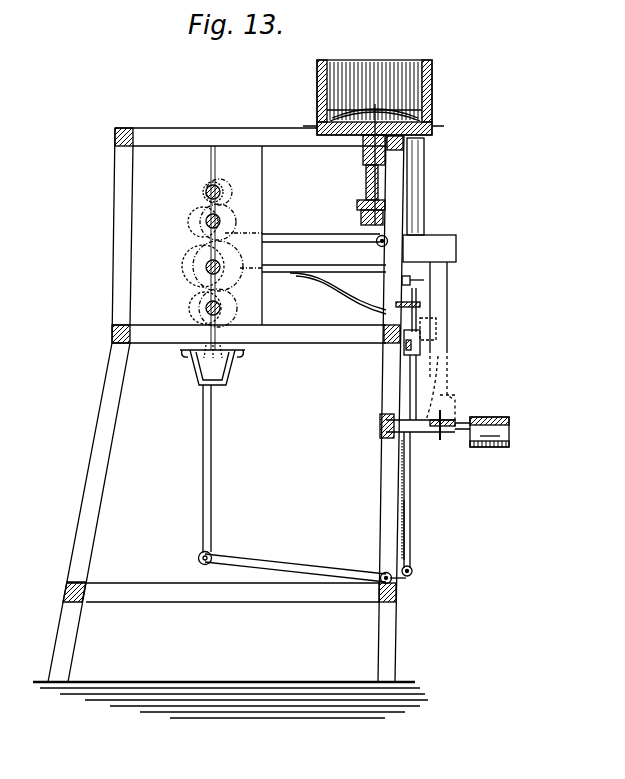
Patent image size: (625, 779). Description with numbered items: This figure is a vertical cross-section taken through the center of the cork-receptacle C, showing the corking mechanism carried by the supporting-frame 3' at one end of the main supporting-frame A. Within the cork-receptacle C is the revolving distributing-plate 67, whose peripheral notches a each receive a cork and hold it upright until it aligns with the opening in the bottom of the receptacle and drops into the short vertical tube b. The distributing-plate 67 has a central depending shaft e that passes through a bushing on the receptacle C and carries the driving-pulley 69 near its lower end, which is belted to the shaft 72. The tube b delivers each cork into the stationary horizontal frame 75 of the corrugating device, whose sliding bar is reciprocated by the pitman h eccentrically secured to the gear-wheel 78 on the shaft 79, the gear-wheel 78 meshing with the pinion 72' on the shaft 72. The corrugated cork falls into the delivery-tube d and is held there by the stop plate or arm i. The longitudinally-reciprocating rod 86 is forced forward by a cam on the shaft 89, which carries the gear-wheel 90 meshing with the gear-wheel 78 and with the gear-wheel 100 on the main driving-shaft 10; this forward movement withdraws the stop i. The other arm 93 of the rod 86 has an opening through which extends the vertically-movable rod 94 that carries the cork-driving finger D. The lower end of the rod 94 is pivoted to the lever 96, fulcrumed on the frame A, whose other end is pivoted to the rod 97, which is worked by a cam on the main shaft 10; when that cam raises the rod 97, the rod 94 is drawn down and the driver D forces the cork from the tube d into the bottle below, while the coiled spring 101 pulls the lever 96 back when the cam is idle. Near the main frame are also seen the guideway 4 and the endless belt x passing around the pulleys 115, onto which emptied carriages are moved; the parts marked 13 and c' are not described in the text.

The supporting-frame of the corking mechanism 3' is at (230, 415).
The supporting-frame A is at (208, 512).
The cork-supply receptacle C is at (374, 97).
The distributing-plate 67 is at (398, 120).
The peripheral notches a is at (373, 121).
The central depending shaft e is at (366, 178).
The driving-pulley 69 is at (361, 212).
The vertical tube b is at (422, 186).
The stationary horizontal frame 75 is at (429, 248).
The delivery-tube d is at (446, 346).
The pitman h is at (325, 232).
The longitudinally-reciprocating rod 86 is at (324, 261).
The arm of the rod 86 93 is at (338, 296).
The pinion 72' is at (203, 248).
The shaft 72 is at (205, 192).
The gear-wheel 78 is at (197, 222).
The shaft 79 is at (218, 224).
The shaft 89 is at (208, 266).
The gear-wheel 90 is at (216, 266).
The gear-wheel 100 is at (198, 308).
The main driving-shaft 10 is at (222, 310).
The rod 97 is at (212, 451).
The lever 96 is at (303, 568).
The lug 13 is at (399, 281).
The stop plate or arm i is at (417, 280).
The cork-driving finger D is at (404, 345).
The rod c' is at (416, 387).
The guideway 4 is at (436, 432).
The endless belt x is at (473, 447).
The pulleys 115 is at (509, 437).
The vertically-movable rod 94 is at (410, 474).
The coiled spring 101 is at (411, 508).